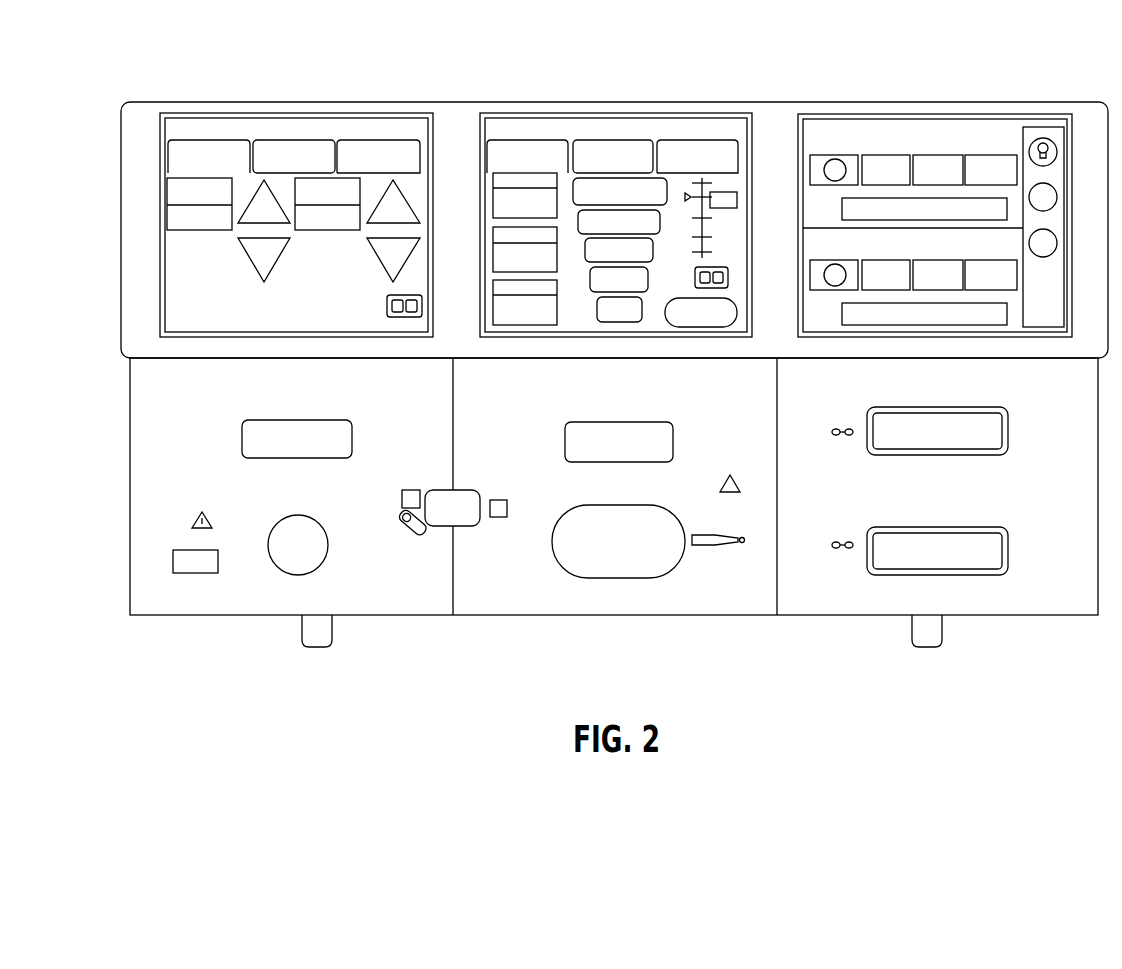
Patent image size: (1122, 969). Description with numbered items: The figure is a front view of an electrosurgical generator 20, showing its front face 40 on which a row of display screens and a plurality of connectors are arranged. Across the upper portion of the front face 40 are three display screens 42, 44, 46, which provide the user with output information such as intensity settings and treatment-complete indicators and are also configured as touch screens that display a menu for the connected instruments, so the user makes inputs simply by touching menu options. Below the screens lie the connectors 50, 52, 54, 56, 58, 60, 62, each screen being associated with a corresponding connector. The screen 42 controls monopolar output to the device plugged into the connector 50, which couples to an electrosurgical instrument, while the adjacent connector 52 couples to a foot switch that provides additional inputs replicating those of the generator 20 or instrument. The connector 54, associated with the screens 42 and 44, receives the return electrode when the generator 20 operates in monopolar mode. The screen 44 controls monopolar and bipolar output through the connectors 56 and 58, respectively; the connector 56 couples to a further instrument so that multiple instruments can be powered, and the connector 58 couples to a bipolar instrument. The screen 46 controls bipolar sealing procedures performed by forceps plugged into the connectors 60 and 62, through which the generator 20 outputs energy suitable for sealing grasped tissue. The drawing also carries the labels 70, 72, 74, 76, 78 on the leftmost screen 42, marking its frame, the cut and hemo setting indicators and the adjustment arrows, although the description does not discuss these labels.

The generator 20 is at (983, 50).
The front face 40 is at (482, 103).
The display screen 42 is at (357, 113).
The display screen 44 is at (618, 113).
The display screen 46 is at (880, 115).
The connector 50 is at (242, 440).
The connector 52 is at (277, 523).
The connector 54 is at (447, 488).
The connector 56 is at (588, 422).
The connector 58 is at (568, 508).
The connector 60 is at (890, 405).
The connector 62 is at (890, 525).
The touch screen display 70 is at (163, 193).
The cut mode setting indicator 72 is at (182, 178).
The hemo mode setting indicator 74 is at (310, 178).
The cut adjustment button 76 is at (240, 240).
The hemo adjustment button 78 is at (367, 240).